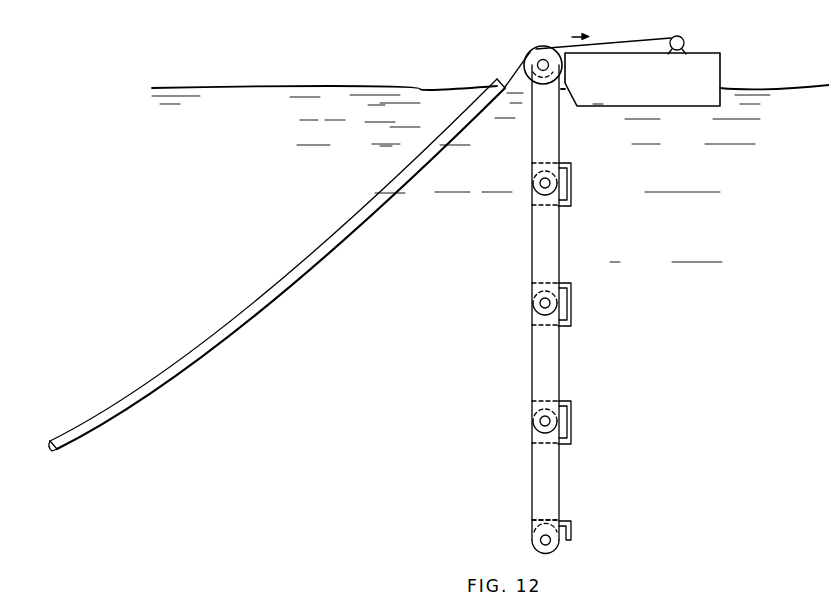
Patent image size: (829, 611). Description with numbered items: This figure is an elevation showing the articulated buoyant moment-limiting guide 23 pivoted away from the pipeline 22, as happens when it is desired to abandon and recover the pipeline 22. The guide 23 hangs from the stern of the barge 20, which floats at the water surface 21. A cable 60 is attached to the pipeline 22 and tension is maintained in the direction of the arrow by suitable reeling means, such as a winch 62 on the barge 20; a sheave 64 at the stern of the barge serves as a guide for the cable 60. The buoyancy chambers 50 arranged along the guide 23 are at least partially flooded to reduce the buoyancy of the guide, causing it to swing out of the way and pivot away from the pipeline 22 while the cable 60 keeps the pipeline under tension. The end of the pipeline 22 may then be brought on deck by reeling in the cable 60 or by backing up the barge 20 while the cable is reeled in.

The float/vessel 20 is at (713, 70).
The water surface 21 is at (227, 89).
The pipeline 22 is at (328, 236).
The guide tower 23 is at (568, 341).
The buoyancy chambers 50 is at (547, 135).
The cable 60 is at (596, 40).
The winch 62 is at (684, 43).
The sheave 64 is at (538, 50).